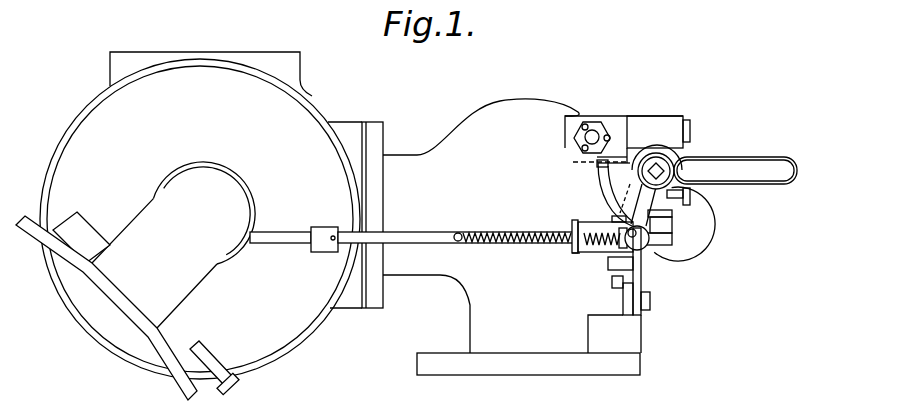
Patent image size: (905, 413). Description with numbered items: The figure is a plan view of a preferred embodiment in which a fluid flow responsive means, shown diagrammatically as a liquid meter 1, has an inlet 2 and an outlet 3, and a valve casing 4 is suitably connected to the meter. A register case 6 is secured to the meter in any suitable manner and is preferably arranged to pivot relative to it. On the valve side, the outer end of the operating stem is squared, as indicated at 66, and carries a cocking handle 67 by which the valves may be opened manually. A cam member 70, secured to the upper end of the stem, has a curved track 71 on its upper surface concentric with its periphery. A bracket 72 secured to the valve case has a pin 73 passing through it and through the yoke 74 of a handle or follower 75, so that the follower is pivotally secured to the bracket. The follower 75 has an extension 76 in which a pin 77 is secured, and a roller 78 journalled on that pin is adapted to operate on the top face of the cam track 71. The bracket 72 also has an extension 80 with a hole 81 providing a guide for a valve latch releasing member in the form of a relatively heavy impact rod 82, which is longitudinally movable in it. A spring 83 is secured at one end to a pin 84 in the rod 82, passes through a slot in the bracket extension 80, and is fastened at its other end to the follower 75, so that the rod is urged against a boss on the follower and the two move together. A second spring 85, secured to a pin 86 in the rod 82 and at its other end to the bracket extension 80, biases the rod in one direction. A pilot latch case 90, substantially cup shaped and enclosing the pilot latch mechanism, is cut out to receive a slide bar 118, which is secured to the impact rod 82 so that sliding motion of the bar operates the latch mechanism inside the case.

The liquid meter 1 is at (278, 331).
The inlet 2 is at (354, 129).
The outlet 3 is at (110, 63).
The valve casing 4 is at (512, 108).
The register case 6 is at (129, 222).
The pilot latch case 90 is at (222, 165).
The slide bar 118 is at (282, 232).
The impact rod 82 is at (410, 232).
The pin 86 is at (455, 242).
The second spring 85 is at (485, 250).
The pin 84 is at (573, 227).
The hole 81 is at (572, 253).
The bracket extension 80 is at (589, 218).
The spring 83 is at (613, 218).
The cam member 70 is at (589, 146).
The curved track 71 is at (607, 181).
The squared outer end of operating stem 66 is at (688, 155).
The cocking handle 67 is at (737, 157).
The pin 77 is at (690, 195).
The roller 78 is at (672, 217).
The extension 76 is at (705, 232).
The follower 75 is at (652, 258).
The bracket 72 is at (612, 262).
The yoke 74 is at (612, 276).
The pin 73 is at (615, 285).